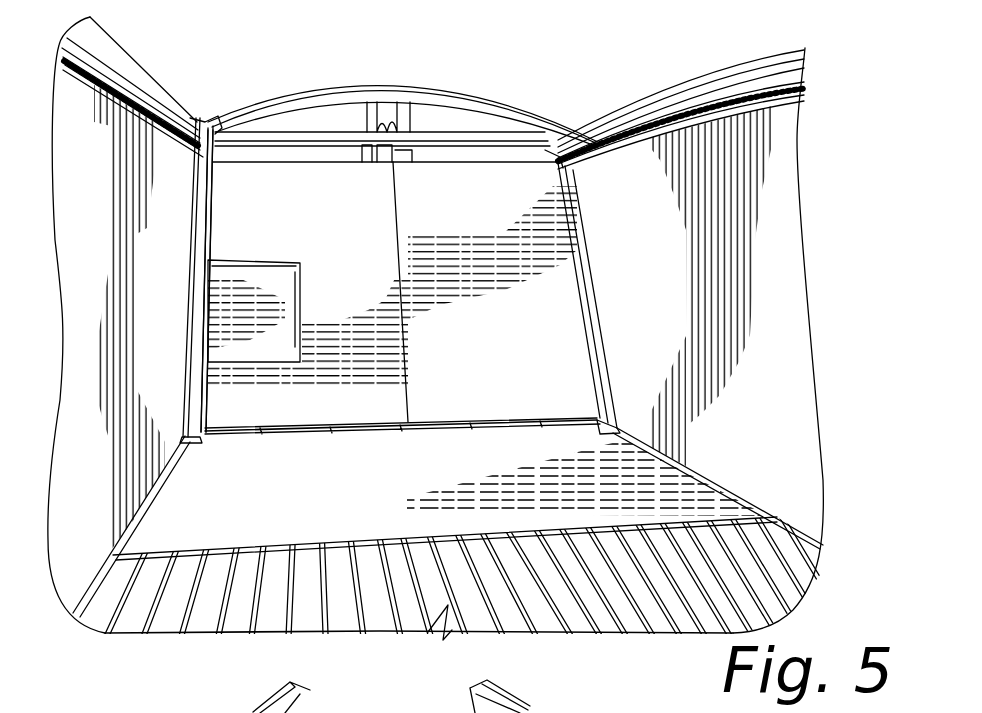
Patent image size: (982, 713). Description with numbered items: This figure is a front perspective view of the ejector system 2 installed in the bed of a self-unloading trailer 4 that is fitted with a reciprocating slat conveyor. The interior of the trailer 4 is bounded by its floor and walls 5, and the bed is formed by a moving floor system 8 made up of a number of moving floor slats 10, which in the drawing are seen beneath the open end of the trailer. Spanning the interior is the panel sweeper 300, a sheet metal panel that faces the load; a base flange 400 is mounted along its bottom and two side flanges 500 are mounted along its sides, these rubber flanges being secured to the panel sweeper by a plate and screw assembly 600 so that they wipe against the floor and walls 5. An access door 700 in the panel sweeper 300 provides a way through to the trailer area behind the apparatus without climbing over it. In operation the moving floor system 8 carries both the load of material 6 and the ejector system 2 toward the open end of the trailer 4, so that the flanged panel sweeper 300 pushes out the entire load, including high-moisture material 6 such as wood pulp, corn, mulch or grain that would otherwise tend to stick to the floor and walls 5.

The ejector system 2 is at (572, 76).
The trailer 4 is at (723, 78).
The floor and walls 5 is at (650, 246).
The material 6 is at (497, 710).
The moving floor system 8 is at (845, 569).
The moving floor slats 10 is at (227, 628).
The panel sweeper 300 is at (347, 203).
The base flange 400 is at (302, 503).
The side flanges 500 is at (197, 225).
The plate and screw assembly 600 is at (473, 420).
The access door 700 is at (300, 347).